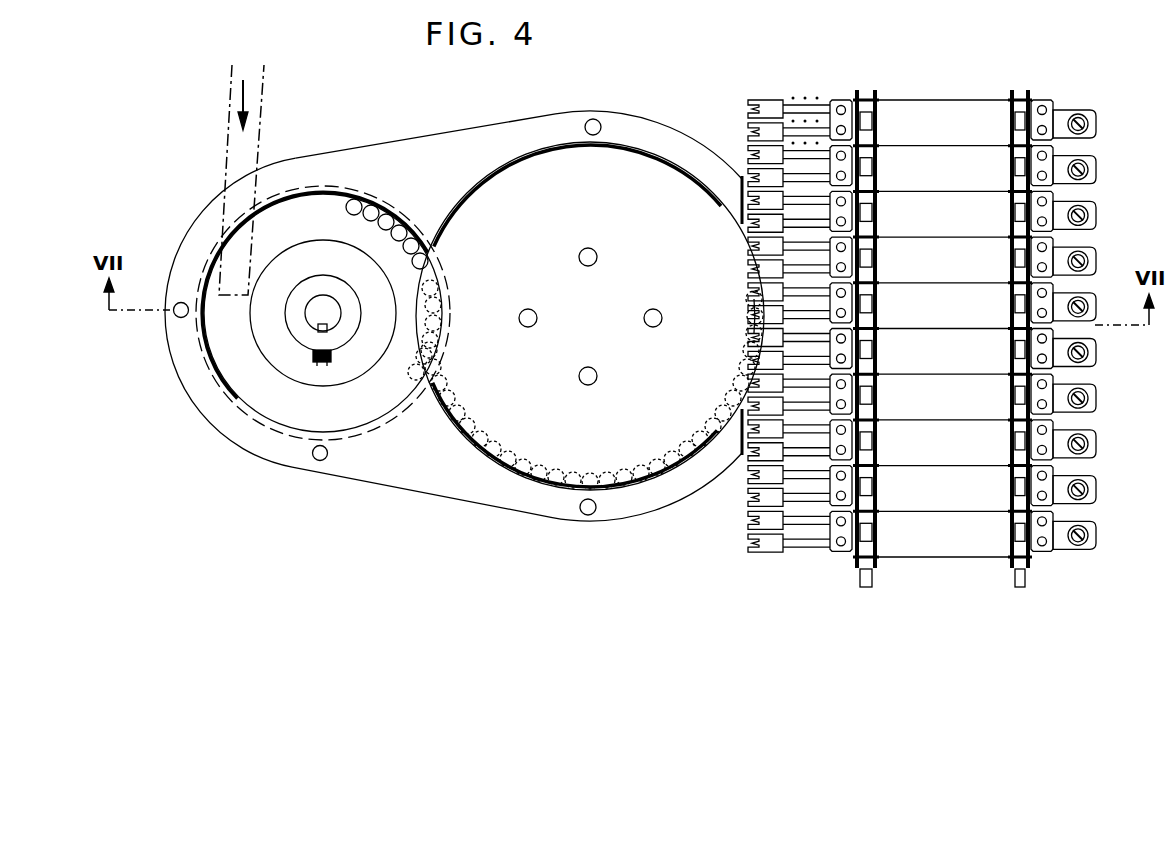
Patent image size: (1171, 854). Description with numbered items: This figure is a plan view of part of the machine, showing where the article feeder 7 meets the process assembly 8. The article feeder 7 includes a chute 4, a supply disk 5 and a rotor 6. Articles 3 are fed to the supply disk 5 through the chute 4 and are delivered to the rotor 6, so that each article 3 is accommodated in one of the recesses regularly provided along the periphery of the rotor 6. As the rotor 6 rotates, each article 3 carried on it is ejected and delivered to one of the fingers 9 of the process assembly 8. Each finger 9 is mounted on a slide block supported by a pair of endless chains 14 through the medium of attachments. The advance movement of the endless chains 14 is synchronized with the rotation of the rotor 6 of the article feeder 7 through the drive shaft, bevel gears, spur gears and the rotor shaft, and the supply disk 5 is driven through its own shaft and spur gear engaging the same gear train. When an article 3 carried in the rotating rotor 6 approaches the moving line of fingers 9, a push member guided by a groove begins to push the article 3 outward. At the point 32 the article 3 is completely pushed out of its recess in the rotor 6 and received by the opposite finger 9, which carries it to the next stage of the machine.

The article 3 is at (384, 220).
The chute 4 is at (258, 88).
The supply disk 5 is at (347, 422).
The rotor 6 is at (640, 452).
The article feeder 7 is at (480, 440).
The process assembly 8 is at (947, 325).
The finger 9 is at (764, 548).
The endless chains 14 is at (868, 522).
The point 32 is at (763, 318).